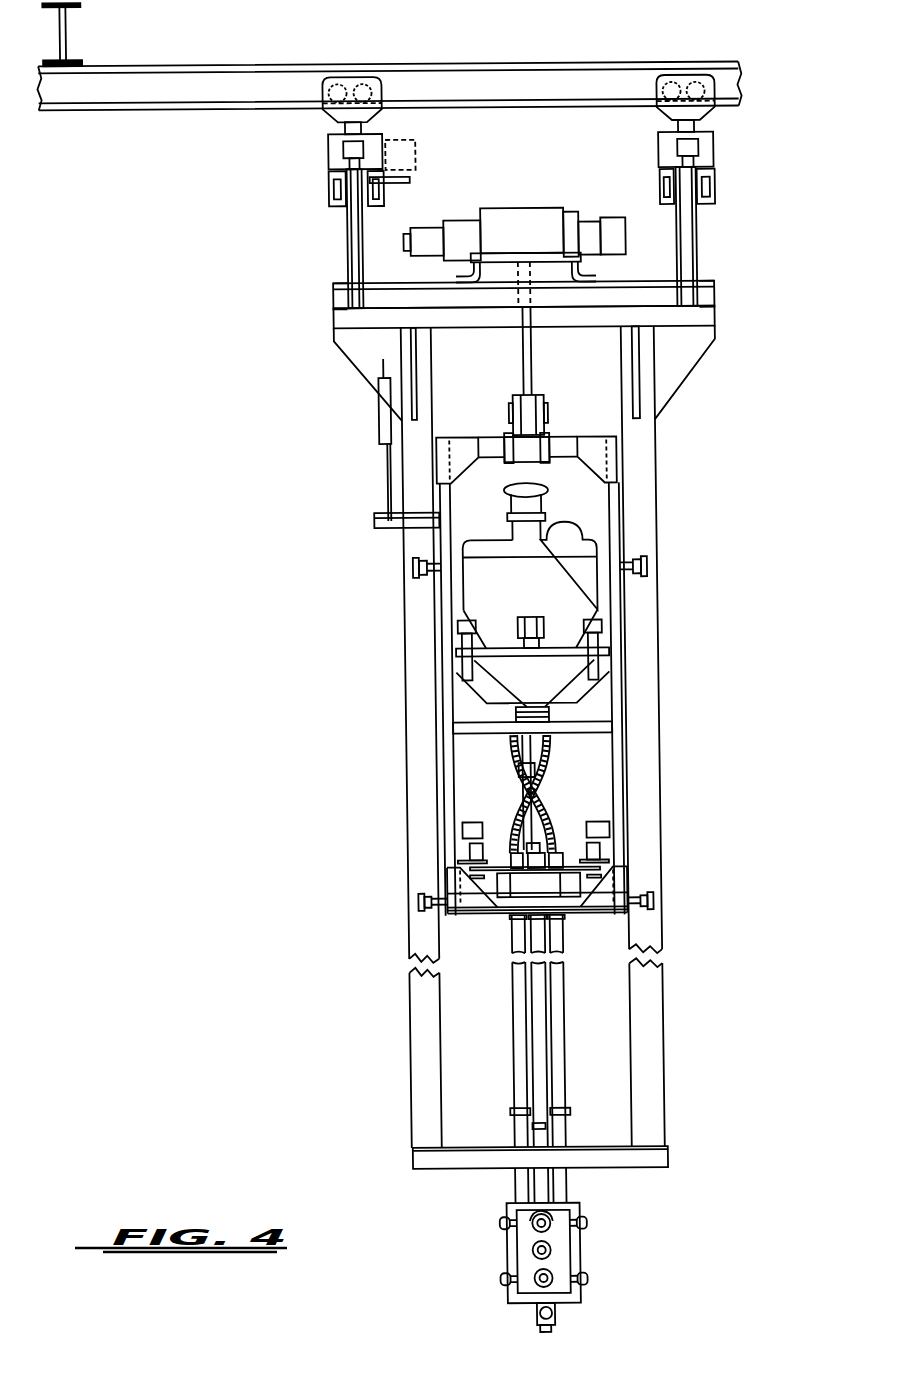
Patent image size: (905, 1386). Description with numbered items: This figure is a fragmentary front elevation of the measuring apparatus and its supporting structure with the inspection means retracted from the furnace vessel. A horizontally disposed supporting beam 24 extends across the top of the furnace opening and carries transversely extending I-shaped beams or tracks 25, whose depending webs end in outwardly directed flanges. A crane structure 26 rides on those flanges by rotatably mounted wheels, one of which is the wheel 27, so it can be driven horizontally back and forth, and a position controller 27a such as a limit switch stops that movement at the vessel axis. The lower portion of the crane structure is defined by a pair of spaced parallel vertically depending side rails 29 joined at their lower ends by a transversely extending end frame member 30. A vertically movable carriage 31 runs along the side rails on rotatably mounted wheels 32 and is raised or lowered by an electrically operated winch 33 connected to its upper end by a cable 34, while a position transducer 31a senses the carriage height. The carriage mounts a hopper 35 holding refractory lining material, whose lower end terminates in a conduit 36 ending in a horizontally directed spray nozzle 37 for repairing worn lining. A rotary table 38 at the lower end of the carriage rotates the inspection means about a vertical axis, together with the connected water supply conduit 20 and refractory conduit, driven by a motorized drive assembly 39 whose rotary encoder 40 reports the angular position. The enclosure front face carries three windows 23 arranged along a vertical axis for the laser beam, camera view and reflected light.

The supporting beam 24 is at (71, 39).
The I-shaped beams or tracks 25 is at (117, 95).
The wheel 27 is at (354, 77).
The position controller 27a is at (420, 142).
The crane structure 26 is at (340, 244).
The position transducer 31a is at (427, 229).
The electrically operated winch 33 is at (499, 218).
The cable 34 is at (533, 350).
The side rails 29 is at (655, 605).
The carriage 31 is at (625, 713).
The wheels 32 is at (408, 564).
The hopper 35 is at (570, 563).
The rotary table 38 is at (564, 856).
The motorized drive assembly 39 is at (603, 831).
The rotary encoder 40 is at (596, 848).
The conduit 36 is at (537, 1014).
The supply conduit 20 is at (503, 1094).
The end frame member 30 is at (658, 1156).
The windows 23 is at (538, 1231).
The spray nozzle 37 is at (522, 1317).